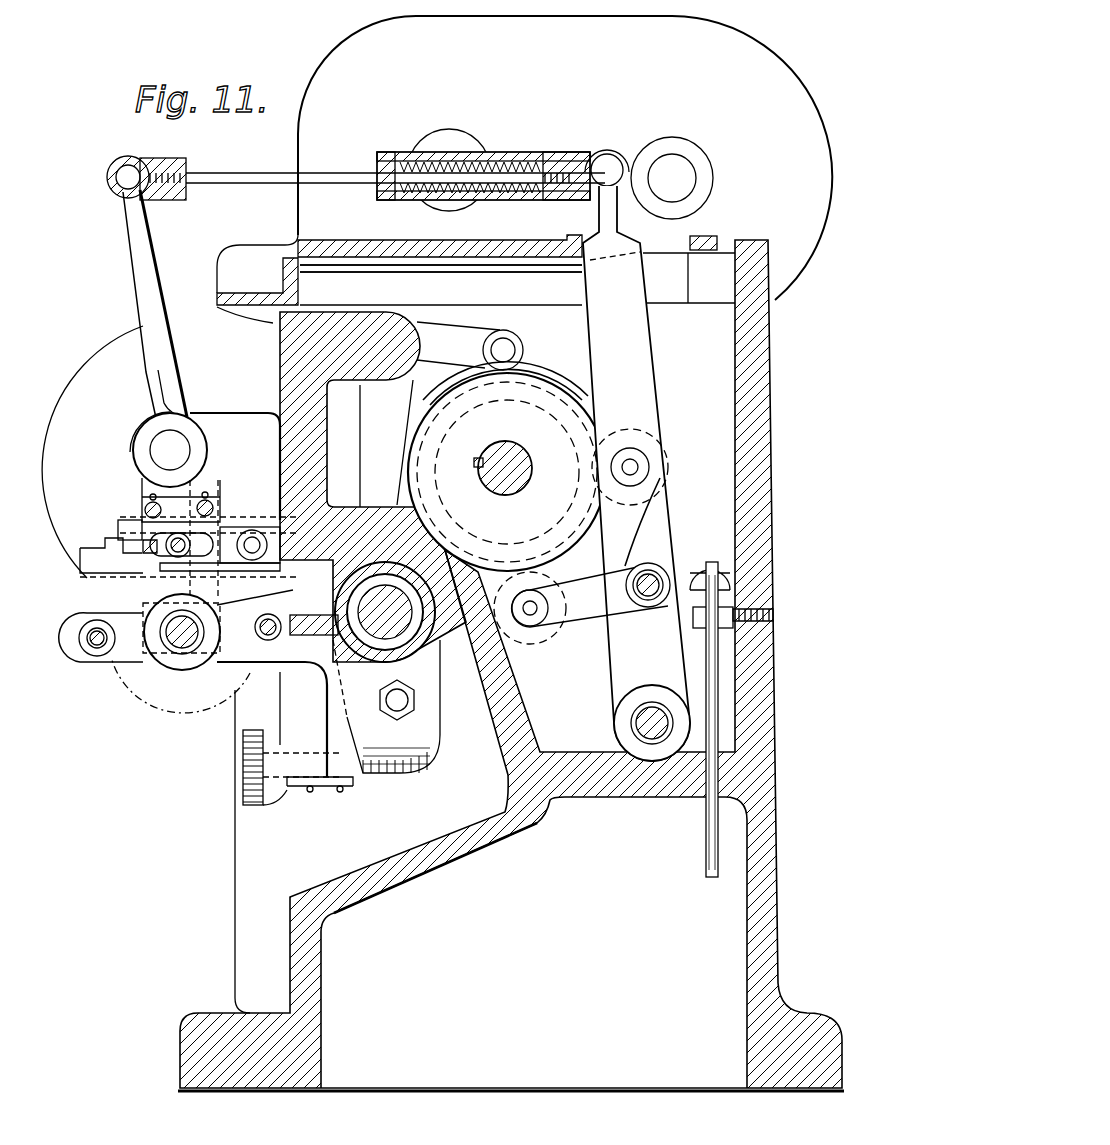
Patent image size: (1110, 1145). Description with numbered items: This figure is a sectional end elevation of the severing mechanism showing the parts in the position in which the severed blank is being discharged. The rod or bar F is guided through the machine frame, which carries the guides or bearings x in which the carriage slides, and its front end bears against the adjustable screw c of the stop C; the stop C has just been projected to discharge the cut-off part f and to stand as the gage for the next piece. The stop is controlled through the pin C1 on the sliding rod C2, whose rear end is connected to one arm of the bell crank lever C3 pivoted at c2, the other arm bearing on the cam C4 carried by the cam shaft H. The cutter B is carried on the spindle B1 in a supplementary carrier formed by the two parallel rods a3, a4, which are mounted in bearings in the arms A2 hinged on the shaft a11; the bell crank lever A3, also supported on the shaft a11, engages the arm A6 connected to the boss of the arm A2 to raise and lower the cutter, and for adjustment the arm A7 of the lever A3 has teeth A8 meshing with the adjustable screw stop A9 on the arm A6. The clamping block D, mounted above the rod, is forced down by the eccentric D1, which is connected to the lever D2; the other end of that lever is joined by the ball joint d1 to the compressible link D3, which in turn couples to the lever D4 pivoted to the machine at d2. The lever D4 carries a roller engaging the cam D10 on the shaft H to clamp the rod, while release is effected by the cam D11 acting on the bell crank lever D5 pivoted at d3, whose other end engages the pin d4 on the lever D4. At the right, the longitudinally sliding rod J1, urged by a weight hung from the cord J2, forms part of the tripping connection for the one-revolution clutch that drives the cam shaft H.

The compressible link D3 is at (377, 150).
The ball joint d1 is at (158, 160).
The lever D2 is at (148, 255).
The eccentric D1 is at (168, 450).
The clamping block D is at (180, 497).
The severed part of the rod f is at (190, 555).
The stop C is at (212, 512).
The bell crank lever A3 is at (238, 512).
The guides or bearings x is at (118, 530).
The rod or bar F is at (100, 550).
The adjustable screw c is at (145, 548).
The pin C1 is at (170, 585).
The cutter B is at (140, 683).
The spindle B1 is at (167, 637).
The rod of supplementary carrier a3 is at (90, 640).
The rod of supplementary carrier a4 is at (267, 636).
The arm A2 is at (307, 660).
The sliding rod C2 is at (243, 750).
The arm of lever A7 is at (365, 797).
The arm A6 is at (427, 686).
The teeth A8 is at (432, 762).
The adjustable screw stop A9 is at (303, 790).
The cam D11 is at (507, 472).
The cam shaft H is at (535, 466).
The cam C4 is at (475, 466).
The bell crank lever C3 is at (455, 330).
The pivot c2 is at (427, 340).
The cam D10 is at (440, 400).
The lever D4 is at (636, 455).
The pin d4 is at (633, 466).
The bell crank lever D5 is at (650, 508).
The shaft a11 is at (410, 627).
The pivot d3 is at (652, 582).
The pivot d2 is at (652, 705).
The longitudinally sliding rod J1 is at (722, 575).
The cord J2 is at (710, 820).